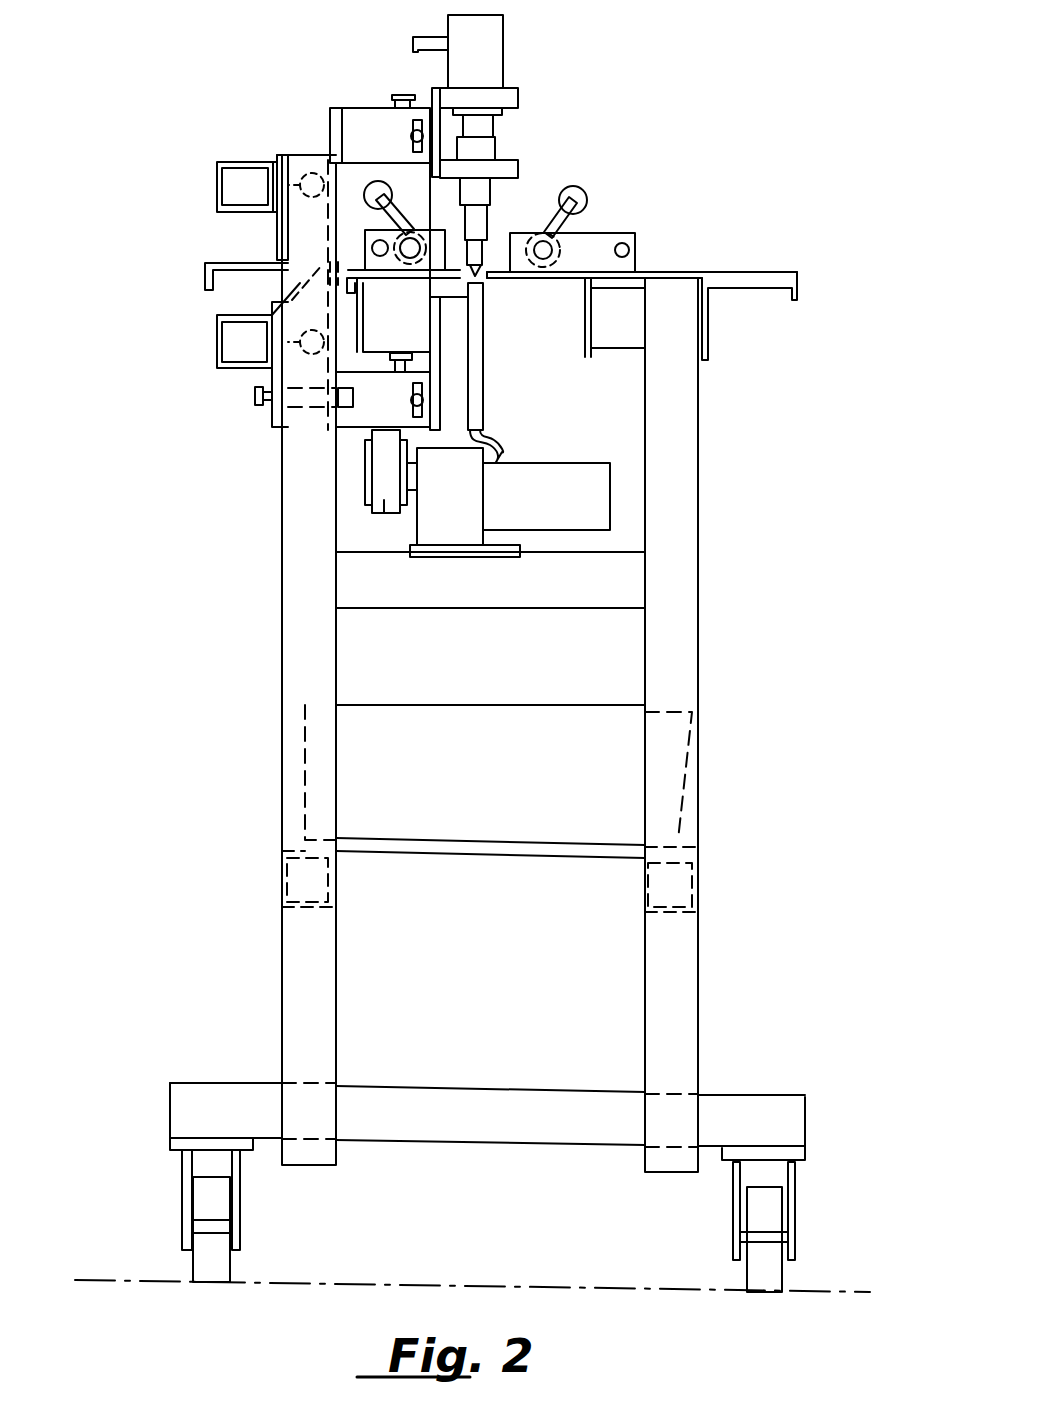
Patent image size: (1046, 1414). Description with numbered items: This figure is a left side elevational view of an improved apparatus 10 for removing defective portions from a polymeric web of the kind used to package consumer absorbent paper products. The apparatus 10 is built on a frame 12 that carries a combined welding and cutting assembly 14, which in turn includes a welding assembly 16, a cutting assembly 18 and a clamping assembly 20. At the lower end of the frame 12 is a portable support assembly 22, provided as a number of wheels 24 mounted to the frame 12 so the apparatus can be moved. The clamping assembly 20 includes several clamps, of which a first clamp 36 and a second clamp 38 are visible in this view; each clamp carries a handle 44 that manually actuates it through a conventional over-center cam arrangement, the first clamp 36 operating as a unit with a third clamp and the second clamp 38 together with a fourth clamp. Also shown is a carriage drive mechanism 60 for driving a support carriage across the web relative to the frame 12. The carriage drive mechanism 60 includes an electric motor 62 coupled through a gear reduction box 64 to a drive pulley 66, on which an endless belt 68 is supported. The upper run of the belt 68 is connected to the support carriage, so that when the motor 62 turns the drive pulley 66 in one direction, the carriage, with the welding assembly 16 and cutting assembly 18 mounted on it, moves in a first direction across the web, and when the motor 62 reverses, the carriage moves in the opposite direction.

The apparatus 10 is at (658, 118).
The frame 12 is at (700, 578).
The combined welding and cutting assembly 14 is at (437, 215).
The welding assembly 16 is at (528, 160).
The cutting assembly 18 is at (492, 352).
The clamping assembly 20 is at (618, 212).
The portable support assembly 22 is at (735, 1065).
The wheels 24 is at (182, 1172).
The first clamp 36 is at (605, 243).
The second clamp 38 is at (365, 243).
The handle 44 is at (372, 186).
The carriage drive mechanism 60 is at (605, 453).
The electric motor 62 is at (572, 512).
The gear reduction box 64 is at (452, 520).
The drive pulley 66 is at (368, 485).
The endless belt 68 is at (384, 500).